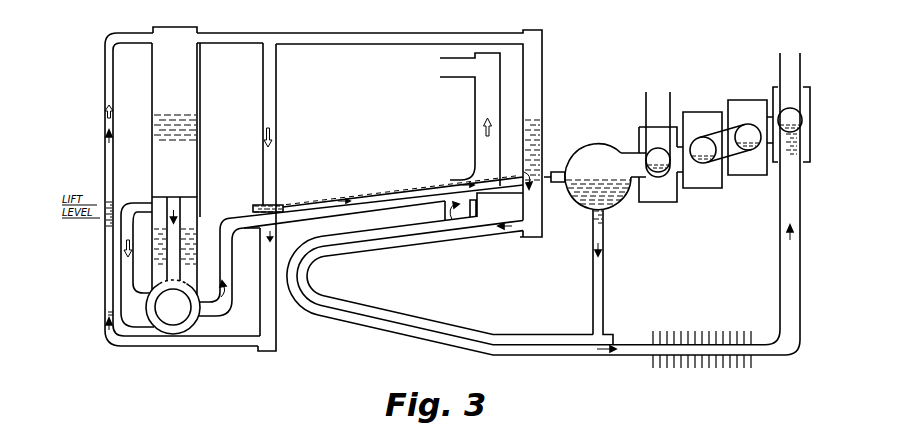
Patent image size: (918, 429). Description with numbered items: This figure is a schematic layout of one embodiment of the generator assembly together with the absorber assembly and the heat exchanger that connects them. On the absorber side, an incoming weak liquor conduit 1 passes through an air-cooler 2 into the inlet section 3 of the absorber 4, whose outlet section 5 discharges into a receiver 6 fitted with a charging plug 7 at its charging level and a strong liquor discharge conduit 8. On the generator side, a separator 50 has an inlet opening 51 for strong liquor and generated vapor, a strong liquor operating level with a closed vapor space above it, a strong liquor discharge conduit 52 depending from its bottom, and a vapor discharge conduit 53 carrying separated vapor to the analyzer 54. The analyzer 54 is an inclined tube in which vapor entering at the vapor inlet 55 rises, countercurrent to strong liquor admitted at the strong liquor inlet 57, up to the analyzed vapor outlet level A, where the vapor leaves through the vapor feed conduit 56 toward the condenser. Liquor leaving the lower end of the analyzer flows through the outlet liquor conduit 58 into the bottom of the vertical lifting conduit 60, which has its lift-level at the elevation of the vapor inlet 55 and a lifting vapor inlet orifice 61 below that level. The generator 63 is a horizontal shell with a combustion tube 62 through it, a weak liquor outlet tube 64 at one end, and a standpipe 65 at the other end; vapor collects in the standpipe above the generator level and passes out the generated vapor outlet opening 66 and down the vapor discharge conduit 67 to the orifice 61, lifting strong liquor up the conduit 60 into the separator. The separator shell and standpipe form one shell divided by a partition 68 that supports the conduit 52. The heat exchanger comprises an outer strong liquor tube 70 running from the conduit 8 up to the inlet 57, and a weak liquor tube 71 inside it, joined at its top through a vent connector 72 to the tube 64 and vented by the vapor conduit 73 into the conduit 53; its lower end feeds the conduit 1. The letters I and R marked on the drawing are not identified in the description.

The incoming weak liquor conduit 1 is at (780, 270).
The air-cooler 2 is at (705, 332).
The inlet section 3 is at (798, 108).
The absorber 4 is at (717, 111).
The outlet section 5 is at (663, 148).
The receiver 6 is at (596, 143).
The charging plug 7 is at (557, 171).
The strong liquor discharge conduit 8 is at (604, 271).
The separator 50 is at (198, 114).
The inlet opening 51 is at (156, 38).
The strong liquor discharge conduit 52 is at (198, 198).
The vapor discharge conduit 53 is at (246, 45).
The analyzer 54 is at (391, 184).
The vapor inlet 55 is at (277, 202).
The vapor feed conduit 56 is at (473, 88).
The strong liquor inlet 57 is at (476, 207).
The outlet liquor conduit 58 is at (263, 322).
The lifting conduit 60 is at (104, 153).
The lifting vapor inlet orifice 61 is at (110, 313).
The combustion tube 62 is at (195, 306).
The generator 63 is at (153, 324).
The weak liquor outlet tube 64 is at (233, 257).
The standpipe 65 is at (200, 217).
The generated vapor outlet opening 66 is at (146, 210).
The vapor discharge conduit 67 is at (140, 202).
The partition 68 is at (185, 193).
The outer strong liquor tube 70 is at (410, 247).
The weak liquor tube 71 is at (497, 236).
The vent connector 72 is at (543, 210).
The vapor conduit 73 is at (543, 81).
The analyzed vapor outlet level A is at (493, 170).
The float ball I is at (795, 130).
The reservoir liquid R is at (602, 175).